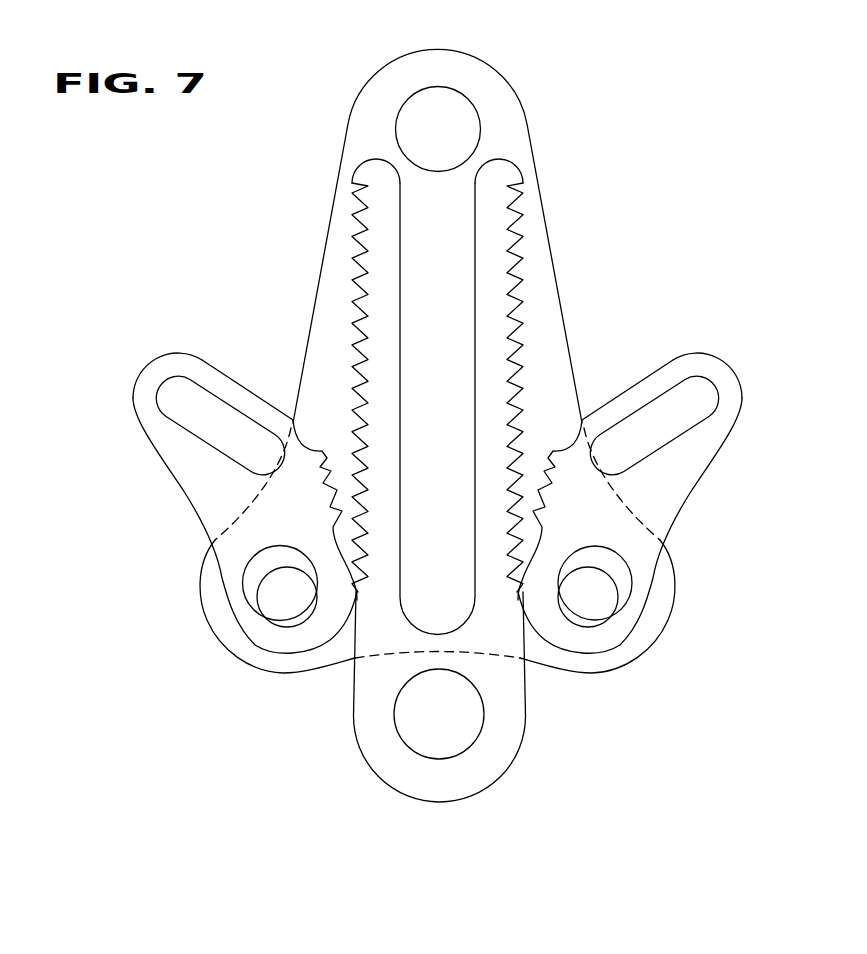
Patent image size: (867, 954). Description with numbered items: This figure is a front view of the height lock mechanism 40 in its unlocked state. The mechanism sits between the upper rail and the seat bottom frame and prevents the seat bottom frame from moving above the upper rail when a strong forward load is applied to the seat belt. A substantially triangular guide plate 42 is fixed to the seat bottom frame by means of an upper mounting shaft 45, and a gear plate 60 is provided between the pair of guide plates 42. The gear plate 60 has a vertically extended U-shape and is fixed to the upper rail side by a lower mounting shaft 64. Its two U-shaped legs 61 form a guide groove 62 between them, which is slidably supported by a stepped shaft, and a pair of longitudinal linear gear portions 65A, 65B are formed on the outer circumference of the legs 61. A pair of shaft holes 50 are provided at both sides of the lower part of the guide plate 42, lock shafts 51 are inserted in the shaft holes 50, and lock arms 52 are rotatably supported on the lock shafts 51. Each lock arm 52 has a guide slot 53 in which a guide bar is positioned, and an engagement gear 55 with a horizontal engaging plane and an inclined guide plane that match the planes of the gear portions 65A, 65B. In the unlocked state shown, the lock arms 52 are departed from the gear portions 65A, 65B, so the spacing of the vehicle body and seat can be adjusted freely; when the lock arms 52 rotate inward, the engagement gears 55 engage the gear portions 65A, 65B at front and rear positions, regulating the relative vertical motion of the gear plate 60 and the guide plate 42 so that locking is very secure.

The height lock mechanism 40 is at (437, 336).
The guide plate 42 is at (366, 75).
The upper mounting shaft 45 is at (453, 107).
The U-shaped leg 61 is at (360, 167).
The guide groove 62 is at (433, 213).
The gear portion 65A is at (520, 262).
The gear portion 65B is at (353, 270).
The lock arm 52 is at (175, 463).
The guide slot 53 is at (177, 395).
The engagement gear 55 is at (330, 457).
The shaft hole 50 is at (262, 547).
The lock shaft 51 is at (273, 593).
The gear plate 60 is at (420, 697).
The lower mounting shaft 64 is at (457, 722).